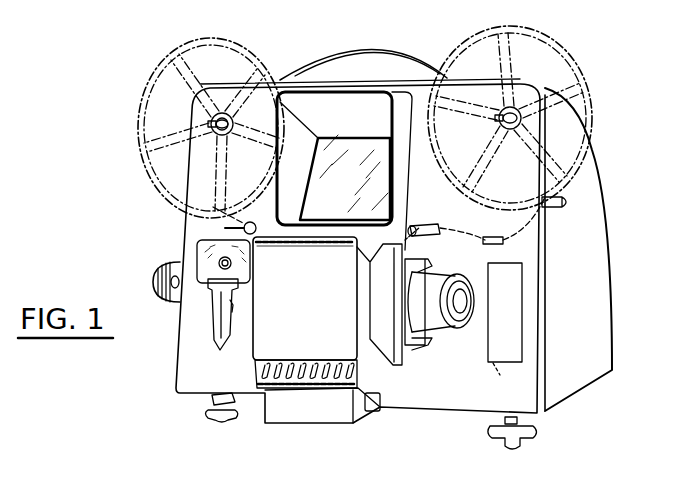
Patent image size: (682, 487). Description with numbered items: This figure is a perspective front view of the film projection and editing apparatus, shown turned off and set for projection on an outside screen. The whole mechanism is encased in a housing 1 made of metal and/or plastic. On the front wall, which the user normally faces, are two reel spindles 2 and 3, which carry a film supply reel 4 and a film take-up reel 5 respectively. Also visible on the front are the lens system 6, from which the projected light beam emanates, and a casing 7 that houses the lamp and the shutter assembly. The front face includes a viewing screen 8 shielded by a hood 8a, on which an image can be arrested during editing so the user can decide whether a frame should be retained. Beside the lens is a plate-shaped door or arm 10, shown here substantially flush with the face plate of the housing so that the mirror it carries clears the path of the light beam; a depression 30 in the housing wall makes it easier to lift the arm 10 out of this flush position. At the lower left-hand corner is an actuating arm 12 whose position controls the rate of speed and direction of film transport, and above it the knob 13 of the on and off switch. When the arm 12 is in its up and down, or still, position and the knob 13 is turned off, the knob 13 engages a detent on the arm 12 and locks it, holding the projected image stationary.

The housing 1 is at (427, 402).
The reel spindle 2 is at (495, 118).
The reel spindle 3 is at (210, 124).
The film supply reel 4 is at (593, 88).
The film take-up reel 5 is at (137, 153).
The lens system 6 is at (446, 351).
The casing 7 is at (272, 345).
The viewing screen 8 is at (333, 208).
The hood 8a is at (397, 96).
The arm 10 is at (512, 323).
The actuating arm 12 is at (213, 327).
The knob 13 is at (220, 261).
The depression 30 is at (507, 367).